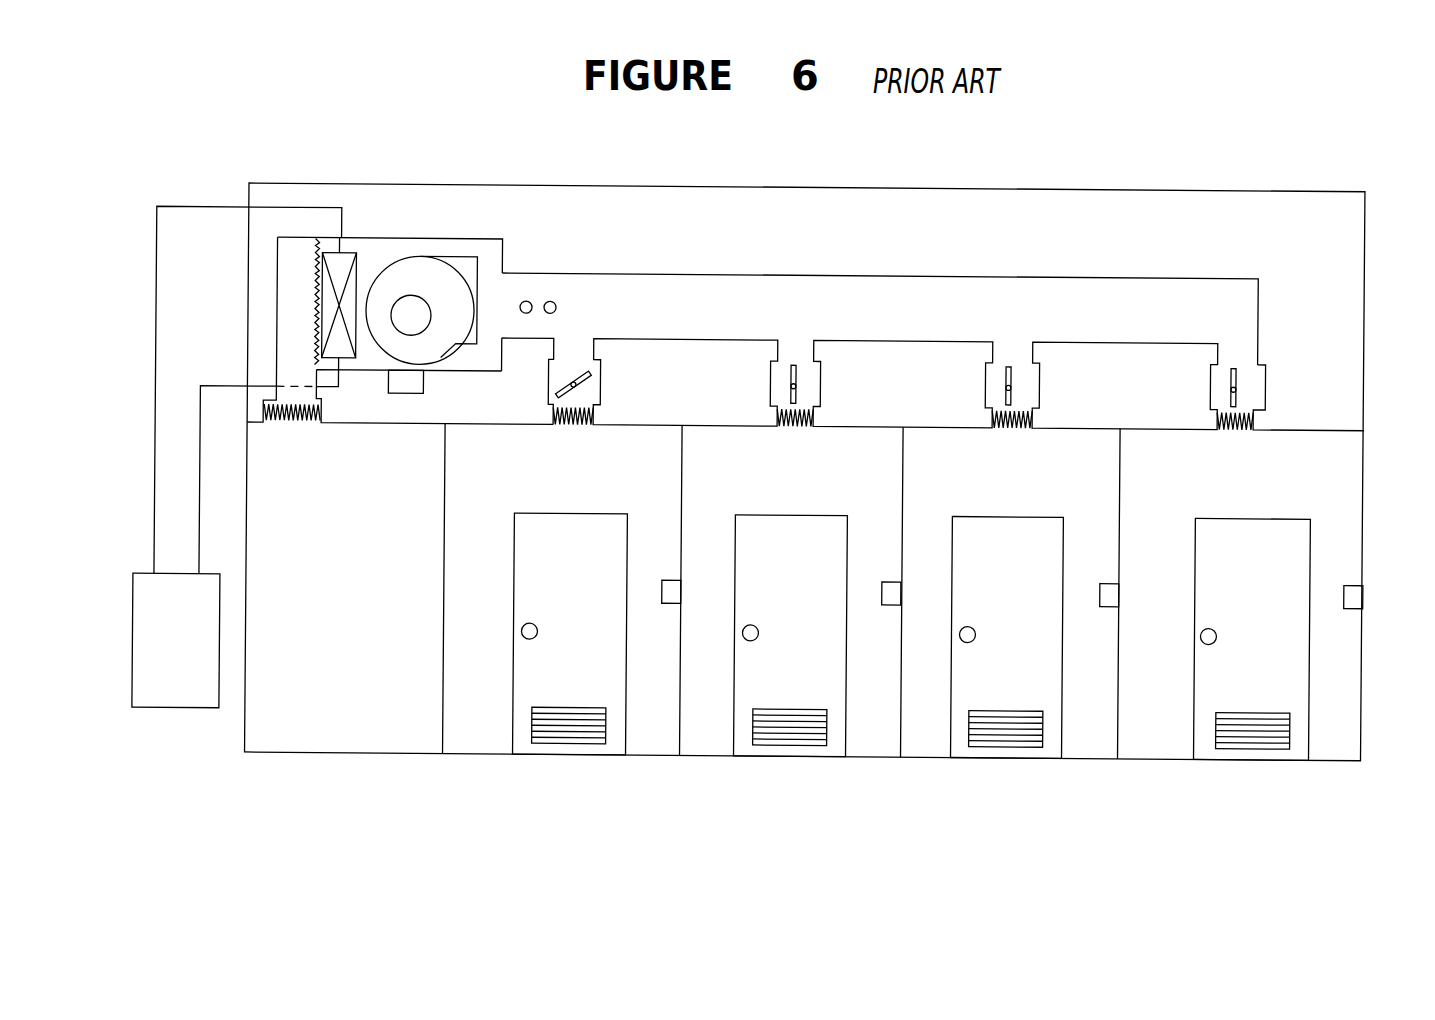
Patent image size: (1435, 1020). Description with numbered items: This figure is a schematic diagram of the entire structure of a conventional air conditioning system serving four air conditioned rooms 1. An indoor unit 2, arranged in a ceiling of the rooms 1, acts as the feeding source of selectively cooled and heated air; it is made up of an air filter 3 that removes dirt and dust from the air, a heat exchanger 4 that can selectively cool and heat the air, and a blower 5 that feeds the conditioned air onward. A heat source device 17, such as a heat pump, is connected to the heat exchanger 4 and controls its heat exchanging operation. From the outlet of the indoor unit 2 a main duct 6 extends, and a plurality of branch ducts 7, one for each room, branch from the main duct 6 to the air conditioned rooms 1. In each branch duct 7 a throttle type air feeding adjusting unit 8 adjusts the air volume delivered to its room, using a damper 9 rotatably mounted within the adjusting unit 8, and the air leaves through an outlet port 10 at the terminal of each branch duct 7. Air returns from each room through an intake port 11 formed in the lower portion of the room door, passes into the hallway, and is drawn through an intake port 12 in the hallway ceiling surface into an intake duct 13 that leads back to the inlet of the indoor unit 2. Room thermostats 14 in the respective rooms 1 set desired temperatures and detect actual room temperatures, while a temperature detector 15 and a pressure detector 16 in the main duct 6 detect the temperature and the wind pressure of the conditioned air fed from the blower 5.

The air conditioned rooms 1 is at (481, 735).
The indoor unit 2 is at (432, 232).
The air filter 3 is at (316, 290).
The heat exchanger 4 is at (340, 252).
The blower 5 is at (405, 256).
The main duct 6 is at (733, 271).
The branch ducts 7 is at (550, 352).
The air feeding adjusting units 8 is at (600, 375).
The dampers 9 is at (597, 390).
The outlet ports 10 is at (574, 424).
The intake ports 11 is at (570, 738).
The intake port 12 is at (289, 426).
The intake duct 13 is at (278, 313).
The room thermostats 14 is at (666, 578).
The temperature detector 15 is at (527, 298).
The pressure detector 16 is at (551, 298).
The heat source device 17 is at (169, 710).